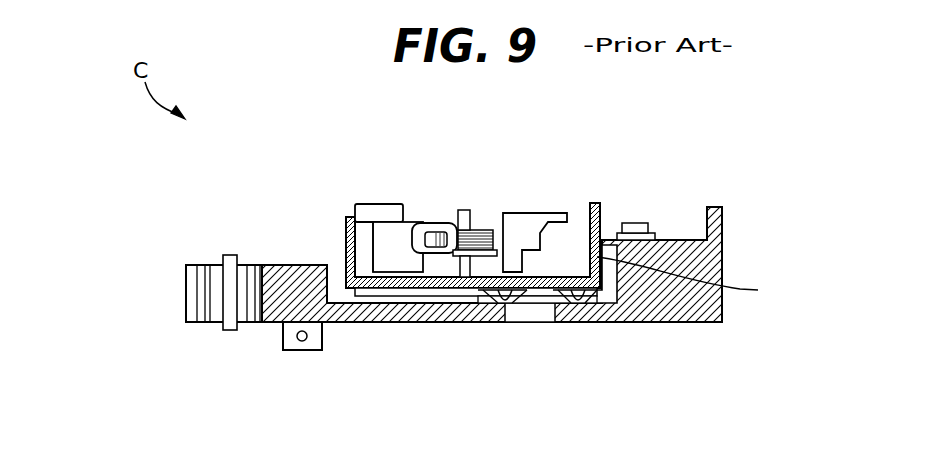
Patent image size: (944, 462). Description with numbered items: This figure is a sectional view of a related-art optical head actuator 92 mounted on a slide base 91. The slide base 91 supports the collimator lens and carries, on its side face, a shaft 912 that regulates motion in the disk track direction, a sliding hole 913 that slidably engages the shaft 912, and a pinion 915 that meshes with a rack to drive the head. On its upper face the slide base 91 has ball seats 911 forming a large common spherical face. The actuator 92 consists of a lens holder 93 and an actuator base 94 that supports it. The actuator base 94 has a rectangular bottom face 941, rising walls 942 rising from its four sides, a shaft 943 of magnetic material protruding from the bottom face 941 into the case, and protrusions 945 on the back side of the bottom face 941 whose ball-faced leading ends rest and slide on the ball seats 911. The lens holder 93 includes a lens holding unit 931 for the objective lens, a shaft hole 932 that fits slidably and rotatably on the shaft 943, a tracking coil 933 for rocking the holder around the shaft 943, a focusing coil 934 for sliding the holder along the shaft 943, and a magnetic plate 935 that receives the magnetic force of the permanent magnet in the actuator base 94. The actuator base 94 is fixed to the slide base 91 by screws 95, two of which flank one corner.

The slide base 91 is at (276, 276).
The pinion 915 is at (207, 292).
The sliding hole 913 is at (292, 350).
The shaft 912 is at (296, 338).
The rising walls 942 is at (696, 274).
The screws 95 is at (637, 228).
The ball seats 911 is at (487, 305).
The actuator 92 is at (372, 180).
The actuator base 94 is at (380, 290).
The bottom face 941 is at (403, 292).
The protrusions 945 is at (578, 302).
The lens holder 93 is at (385, 232).
The tracking coil 933 is at (435, 222).
The shaft hole 932 is at (476, 228).
The shaft 943 is at (464, 222).
The focusing coil 934 is at (482, 228).
The magnetic plate 935 is at (470, 278).
The lens holding unit 931 is at (515, 223).